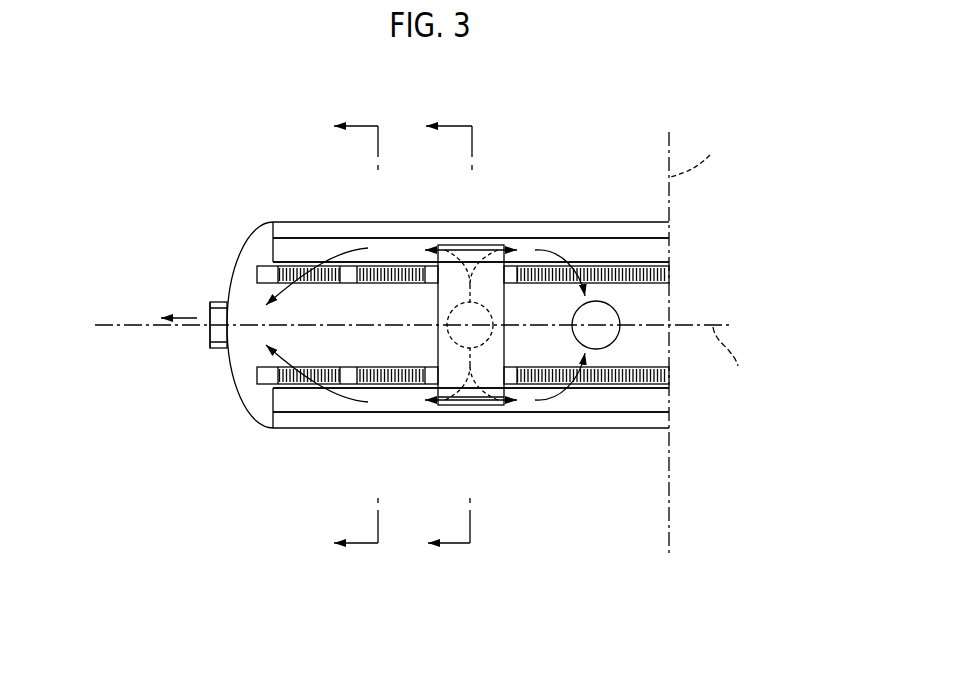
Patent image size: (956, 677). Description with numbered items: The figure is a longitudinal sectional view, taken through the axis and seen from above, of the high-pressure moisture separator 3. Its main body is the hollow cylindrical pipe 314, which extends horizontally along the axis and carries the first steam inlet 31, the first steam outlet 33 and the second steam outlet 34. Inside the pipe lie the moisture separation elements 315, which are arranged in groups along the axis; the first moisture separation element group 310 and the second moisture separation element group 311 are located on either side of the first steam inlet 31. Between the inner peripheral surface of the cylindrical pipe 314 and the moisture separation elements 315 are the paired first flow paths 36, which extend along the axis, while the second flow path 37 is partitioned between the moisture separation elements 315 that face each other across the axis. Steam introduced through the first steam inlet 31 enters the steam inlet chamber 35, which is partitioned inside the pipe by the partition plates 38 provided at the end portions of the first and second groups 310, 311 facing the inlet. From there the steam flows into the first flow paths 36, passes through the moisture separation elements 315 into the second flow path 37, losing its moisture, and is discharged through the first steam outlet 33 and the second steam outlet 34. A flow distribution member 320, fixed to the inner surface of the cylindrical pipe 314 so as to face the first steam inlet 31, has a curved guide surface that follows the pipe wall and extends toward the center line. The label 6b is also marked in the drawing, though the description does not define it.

The high-pressure moisture separator 3 is at (271, 206).
The shaft end portion 6b is at (217, 298).
The cylindrical pipe 314 is at (237, 260).
The No. 1 steam outlet 33 is at (213, 352).
The first flow path 36 is at (282, 404).
The moisture separation element 315 is at (463, 331).
The first moisture separation element group 310 is at (463, 452).
The second moisture separation element group 311 is at (635, 277).
The No. 1 steam inlet 31 is at (458, 349).
The partition plate 38 is at (444, 268).
The steam inlet chamber 35 is at (486, 363).
The flow distribution member 320 is at (443, 398).
The No. 2 steam outlet 34 is at (593, 345).
The second flow path 37 is at (393, 344).